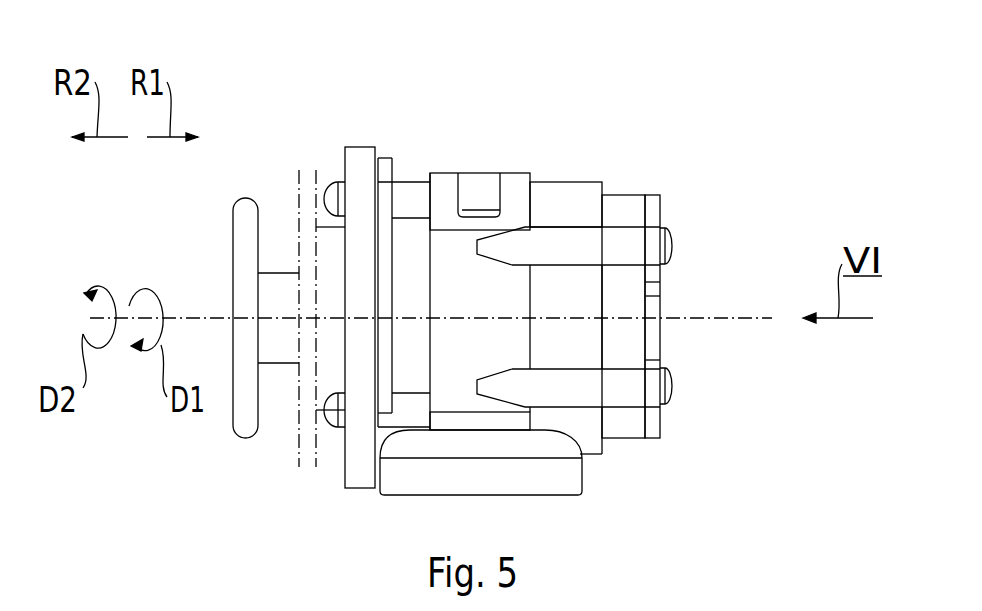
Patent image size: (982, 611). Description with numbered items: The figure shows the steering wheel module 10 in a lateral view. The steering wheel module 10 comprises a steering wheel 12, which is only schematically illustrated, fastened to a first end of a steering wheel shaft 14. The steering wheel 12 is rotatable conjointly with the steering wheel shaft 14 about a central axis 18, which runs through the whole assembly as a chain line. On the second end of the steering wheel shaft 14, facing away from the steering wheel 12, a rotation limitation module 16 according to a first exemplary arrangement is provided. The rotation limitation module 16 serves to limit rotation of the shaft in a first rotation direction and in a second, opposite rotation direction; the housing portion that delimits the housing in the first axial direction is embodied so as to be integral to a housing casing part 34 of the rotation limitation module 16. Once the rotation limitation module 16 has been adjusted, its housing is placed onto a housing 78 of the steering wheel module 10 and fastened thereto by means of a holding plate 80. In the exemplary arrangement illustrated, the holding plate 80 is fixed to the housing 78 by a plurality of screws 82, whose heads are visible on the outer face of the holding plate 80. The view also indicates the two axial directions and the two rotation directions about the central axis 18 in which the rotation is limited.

The steering wheel module 10 is at (714, 122).
The steering wheel 12 is at (236, 275).
The steering wheel shaft 14 is at (276, 278).
The rotation limitation module 16 is at (490, 122).
The central axis 18 is at (746, 318).
The housing casing part 34 is at (582, 197).
The housing 78 is at (517, 196).
The holding plate 80 is at (662, 278).
The screws 82 is at (673, 243).